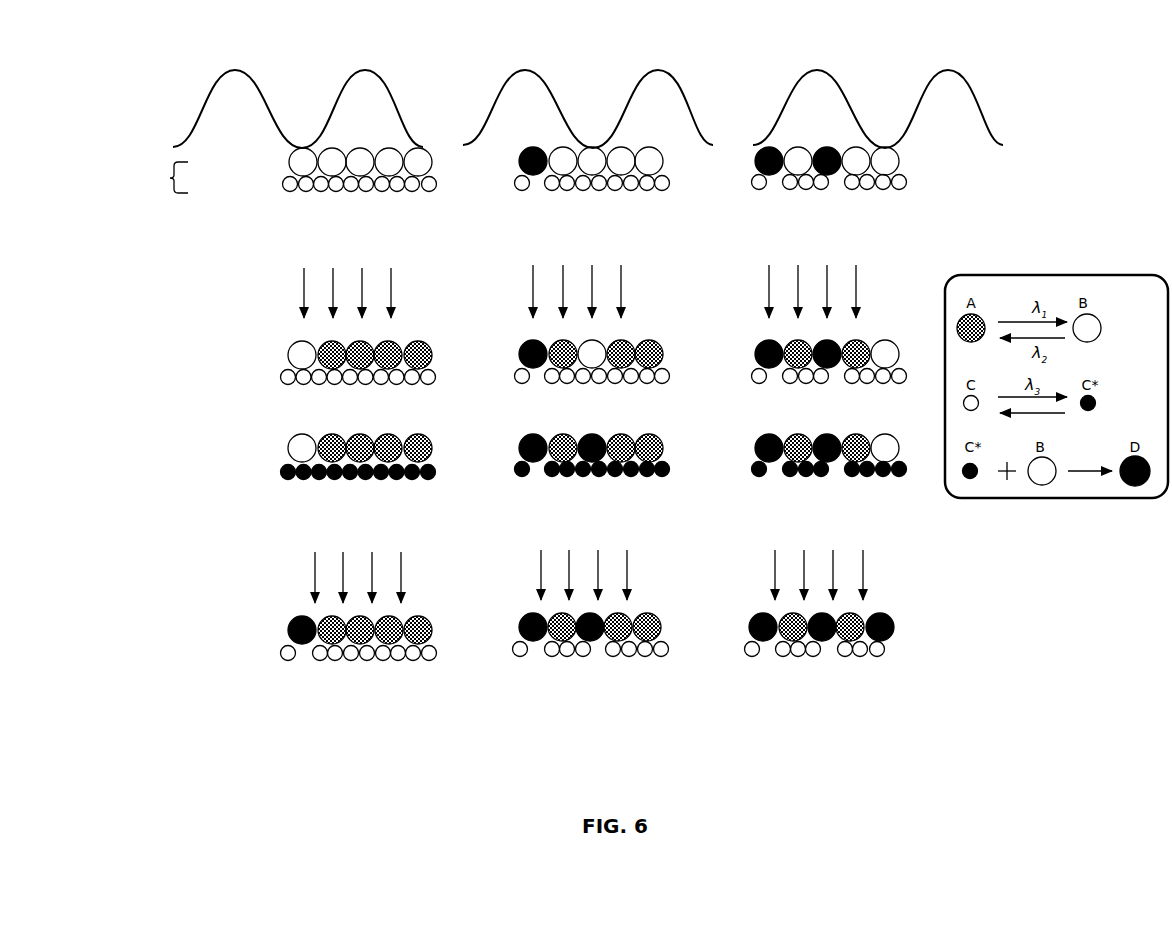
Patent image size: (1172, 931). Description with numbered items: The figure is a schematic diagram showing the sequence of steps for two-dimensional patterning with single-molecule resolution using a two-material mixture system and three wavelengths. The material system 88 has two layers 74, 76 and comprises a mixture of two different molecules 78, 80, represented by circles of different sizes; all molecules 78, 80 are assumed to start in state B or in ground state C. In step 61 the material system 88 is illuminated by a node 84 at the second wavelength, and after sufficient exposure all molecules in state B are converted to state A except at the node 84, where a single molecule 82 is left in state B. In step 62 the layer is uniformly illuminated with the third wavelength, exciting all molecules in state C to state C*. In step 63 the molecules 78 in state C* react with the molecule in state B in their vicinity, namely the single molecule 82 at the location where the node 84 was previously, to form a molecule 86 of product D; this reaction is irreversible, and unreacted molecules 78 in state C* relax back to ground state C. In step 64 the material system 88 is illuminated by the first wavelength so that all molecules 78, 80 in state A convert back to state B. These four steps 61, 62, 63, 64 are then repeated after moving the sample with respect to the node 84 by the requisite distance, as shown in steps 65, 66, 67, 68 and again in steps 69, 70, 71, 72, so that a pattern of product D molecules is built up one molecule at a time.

The step 61 is at (278, 114).
The step 62 is at (358, 299).
The step 63 is at (358, 439).
The step 64 is at (322, 581).
The step 65 is at (588, 111).
The step 66 is at (592, 293).
The step 67 is at (592, 437).
The step 68 is at (591, 578).
The step 69 is at (878, 111).
The step 70 is at (829, 298).
The step 71 is at (829, 437).
The step 72 is at (820, 578).
The layer 74 is at (255, 162).
The layer 76 is at (255, 183).
The molecule 78 is at (290, 185).
The molecule 80 is at (337, 145).
The single molecule 82 is at (298, 355).
The node 84 is at (302, 148).
The molecule of product D 86 is at (290, 628).
The material system 88 is at (168, 178).